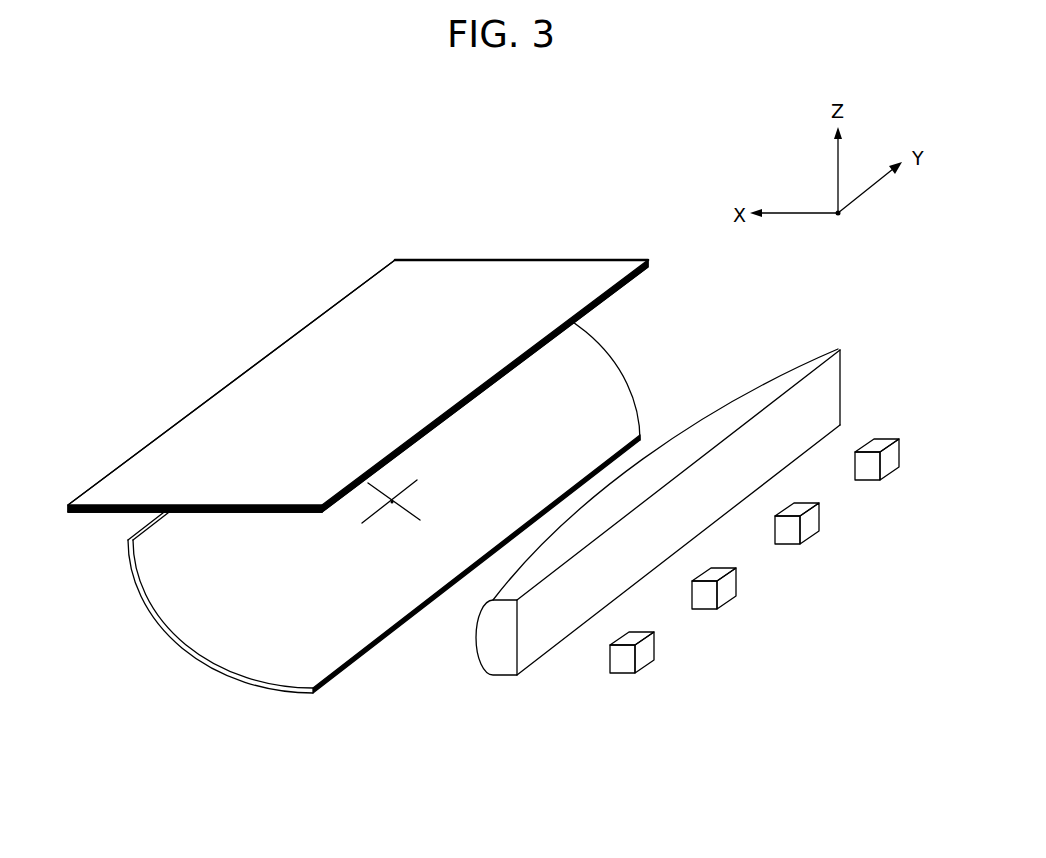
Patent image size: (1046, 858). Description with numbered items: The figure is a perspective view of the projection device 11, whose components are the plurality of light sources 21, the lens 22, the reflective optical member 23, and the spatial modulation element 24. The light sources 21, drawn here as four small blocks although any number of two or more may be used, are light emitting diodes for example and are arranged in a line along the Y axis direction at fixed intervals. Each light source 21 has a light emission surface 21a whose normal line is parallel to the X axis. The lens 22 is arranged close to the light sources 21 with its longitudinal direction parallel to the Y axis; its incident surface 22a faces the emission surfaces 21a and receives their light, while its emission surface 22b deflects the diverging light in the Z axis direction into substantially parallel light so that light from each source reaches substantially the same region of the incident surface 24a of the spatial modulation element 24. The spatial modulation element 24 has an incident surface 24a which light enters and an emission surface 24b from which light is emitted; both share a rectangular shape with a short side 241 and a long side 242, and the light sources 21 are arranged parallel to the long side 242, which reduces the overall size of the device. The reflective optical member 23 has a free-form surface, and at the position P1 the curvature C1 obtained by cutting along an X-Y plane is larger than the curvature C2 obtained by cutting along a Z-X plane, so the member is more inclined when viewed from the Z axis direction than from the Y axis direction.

The projection device 11 is at (420, 218).
The light sources 21 is at (692, 588).
The light emission surface 21a is at (754, 542).
The lens 22 is at (838, 350).
The incident surface 22a is at (835, 384).
The emission surface 22b is at (723, 402).
The reflective optical member 23 is at (537, 428).
The spatial modulation element 24 is at (500, 273).
The short side 241 is at (322, 506).
The long side 242 is at (484, 378).
The incident surface 24a is at (105, 518).
The emission surface 24b is at (137, 480).
The position P1 is at (392, 500).
The curvature C1 is at (410, 488).
The curvature C2 is at (400, 512).